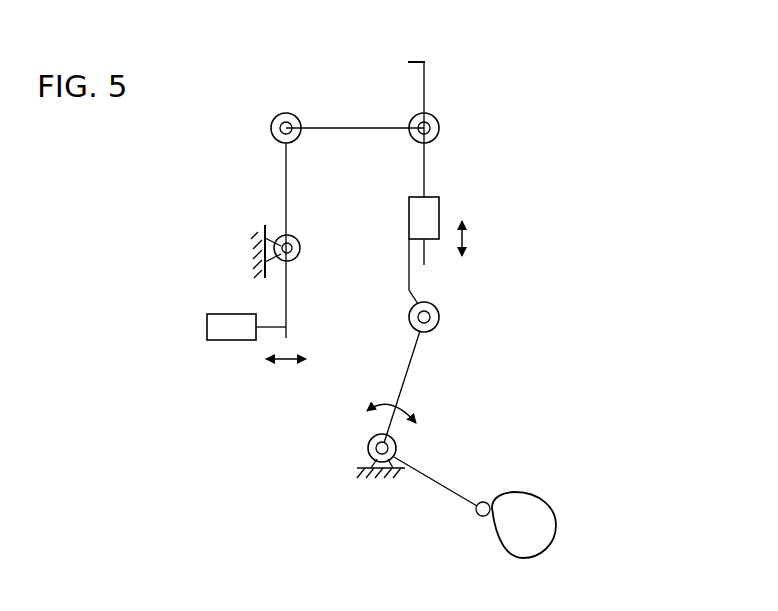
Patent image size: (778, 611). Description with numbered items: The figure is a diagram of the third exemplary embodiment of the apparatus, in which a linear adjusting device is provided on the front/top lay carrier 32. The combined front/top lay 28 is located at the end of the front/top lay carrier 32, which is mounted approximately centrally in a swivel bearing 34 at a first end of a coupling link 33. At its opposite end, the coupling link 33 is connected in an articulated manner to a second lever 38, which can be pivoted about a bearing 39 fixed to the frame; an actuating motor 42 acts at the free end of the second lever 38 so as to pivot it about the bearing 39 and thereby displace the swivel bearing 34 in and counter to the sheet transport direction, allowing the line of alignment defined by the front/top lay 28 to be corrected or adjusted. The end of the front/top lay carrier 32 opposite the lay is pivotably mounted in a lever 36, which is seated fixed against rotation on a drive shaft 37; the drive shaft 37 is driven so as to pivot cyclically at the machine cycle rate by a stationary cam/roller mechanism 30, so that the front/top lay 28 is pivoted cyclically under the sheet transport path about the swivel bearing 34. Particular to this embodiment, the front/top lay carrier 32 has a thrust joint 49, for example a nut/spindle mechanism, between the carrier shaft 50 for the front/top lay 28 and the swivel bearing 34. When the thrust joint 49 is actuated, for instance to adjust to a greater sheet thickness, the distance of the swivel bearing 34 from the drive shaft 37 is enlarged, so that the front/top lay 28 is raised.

The front/top lay 28 is at (416, 60).
The cam/roller mechanism 30 is at (470, 531).
The front/top lay carrier 32 is at (425, 94).
The coupling link 33 is at (347, 127).
The swivel bearing 34 is at (428, 127).
The lever 36 is at (407, 380).
The drive shaft 37 is at (370, 448).
The second lever 38 is at (286, 180).
The bearing fixed to the frame 39 is at (283, 238).
The actuating motor 42 is at (225, 327).
The thrust joint 49 is at (431, 213).
The carrier shaft 50 is at (428, 313).